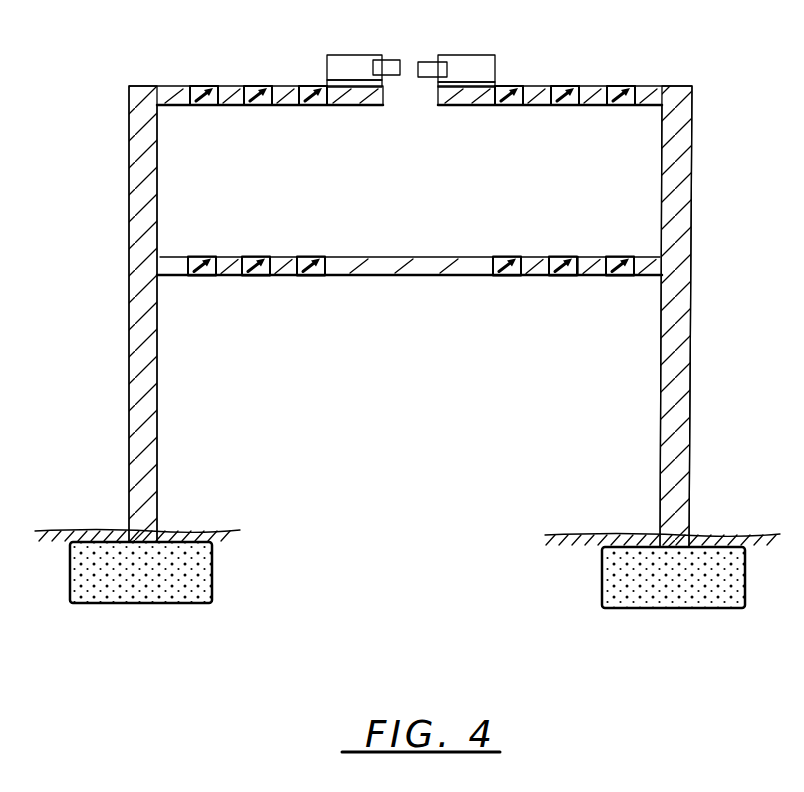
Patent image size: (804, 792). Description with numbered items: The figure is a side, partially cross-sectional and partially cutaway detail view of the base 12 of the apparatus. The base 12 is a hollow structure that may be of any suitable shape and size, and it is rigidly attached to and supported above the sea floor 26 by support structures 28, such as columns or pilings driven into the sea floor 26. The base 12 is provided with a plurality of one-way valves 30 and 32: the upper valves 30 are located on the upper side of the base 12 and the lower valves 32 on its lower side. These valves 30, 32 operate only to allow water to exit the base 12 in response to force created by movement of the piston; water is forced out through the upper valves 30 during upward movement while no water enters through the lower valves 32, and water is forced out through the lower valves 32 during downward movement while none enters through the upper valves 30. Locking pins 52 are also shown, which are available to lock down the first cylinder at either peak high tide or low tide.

The base 12 is at (685, 86).
The sea floor 26 is at (167, 530).
The support structures 28 is at (127, 442).
The upper one-way valves 30 is at (207, 86).
The lower one-way valves 32 is at (257, 277).
The locking pins 52 is at (338, 55).